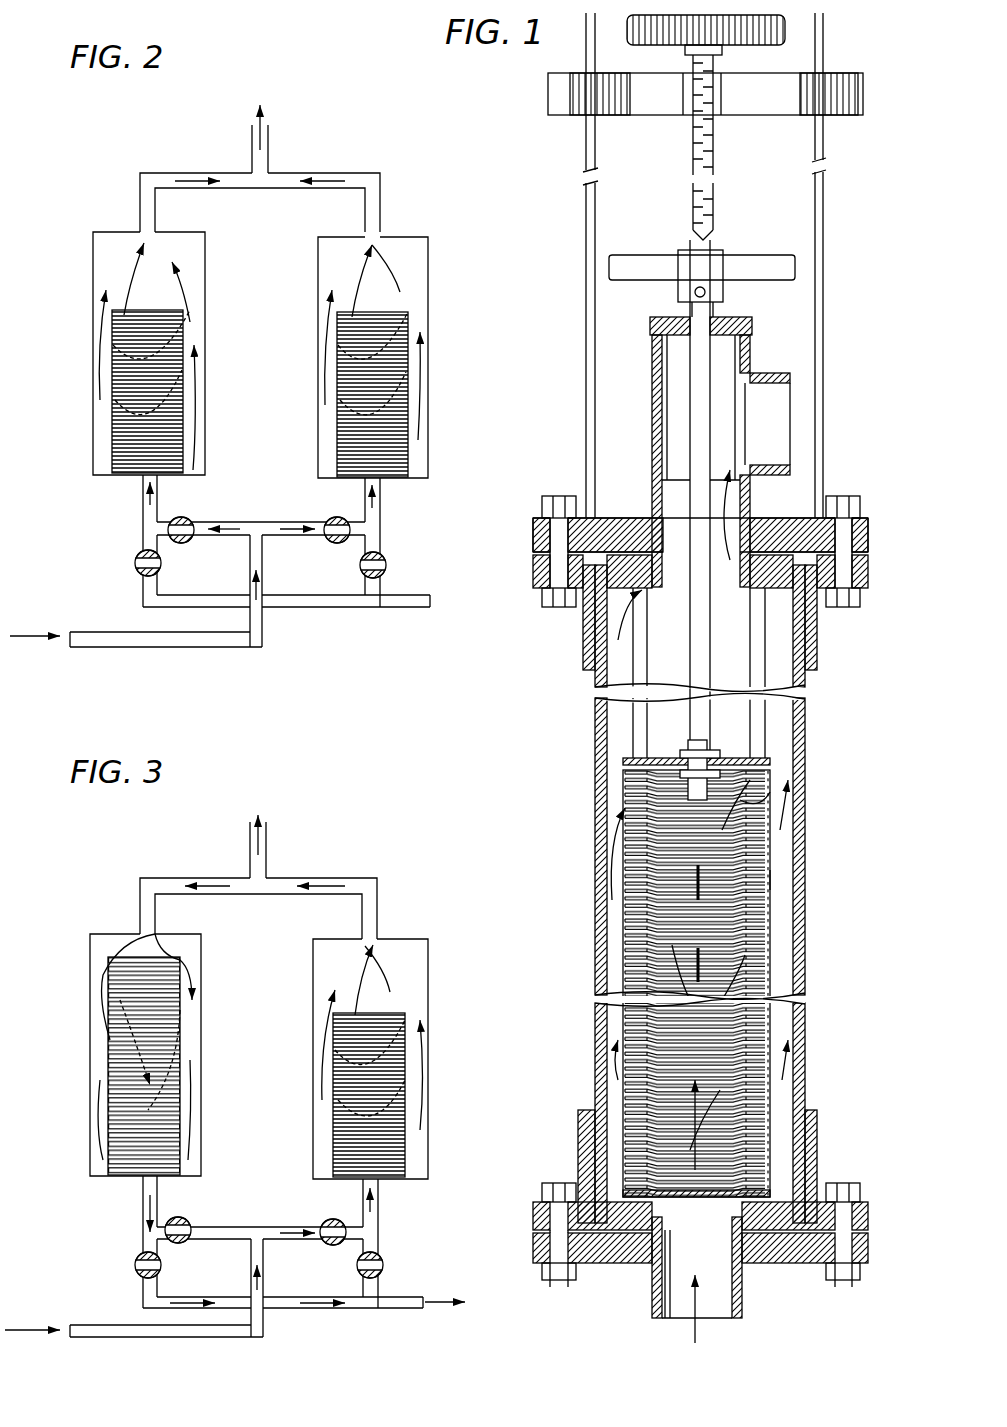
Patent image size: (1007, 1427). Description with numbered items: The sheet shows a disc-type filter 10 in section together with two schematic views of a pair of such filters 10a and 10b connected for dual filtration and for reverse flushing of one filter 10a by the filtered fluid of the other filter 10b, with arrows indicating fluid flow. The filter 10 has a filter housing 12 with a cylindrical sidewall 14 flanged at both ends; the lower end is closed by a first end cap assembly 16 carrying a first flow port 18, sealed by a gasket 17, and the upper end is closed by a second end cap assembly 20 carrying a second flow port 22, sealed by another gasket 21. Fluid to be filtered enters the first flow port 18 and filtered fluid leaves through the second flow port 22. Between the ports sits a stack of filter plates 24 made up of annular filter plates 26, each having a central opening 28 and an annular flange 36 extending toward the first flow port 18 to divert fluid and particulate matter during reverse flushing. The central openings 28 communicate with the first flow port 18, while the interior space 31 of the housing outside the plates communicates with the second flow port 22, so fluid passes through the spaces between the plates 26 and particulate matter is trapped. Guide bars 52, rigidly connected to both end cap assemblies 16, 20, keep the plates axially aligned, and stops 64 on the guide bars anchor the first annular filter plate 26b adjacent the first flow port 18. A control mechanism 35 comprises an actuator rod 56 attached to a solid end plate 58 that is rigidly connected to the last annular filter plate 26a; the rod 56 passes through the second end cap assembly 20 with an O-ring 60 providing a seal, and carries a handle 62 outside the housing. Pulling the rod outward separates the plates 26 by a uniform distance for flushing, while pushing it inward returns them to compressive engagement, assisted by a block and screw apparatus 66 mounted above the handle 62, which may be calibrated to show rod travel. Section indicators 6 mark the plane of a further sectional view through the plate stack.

In FIG. 1, the section line 6 is at (690, 877).
In FIG. 1, the filter 10 is at (580, 683).
In FIG. 2, the filter 10a is at (82, 395).
In FIG. 3, the filter 10a is at (82, 1088).
In FIG. 2, the filter 10b is at (315, 372).
In FIG. 3, the filter 10b is at (313, 1085).
In FIG. 2, the filter housing 12 is at (205, 277).
In FIG. 3, the filter housing 12 is at (201, 998).
In FIG. 1, the filter housing 12 is at (808, 718).
In FIG. 1, the cylindrical sidewall 14 is at (600, 850).
In FIG. 1, the first end cap assembly 16 is at (615, 1215).
In FIG. 1, the gasket 17 is at (585, 1240).
In FIG. 2, the first flow port 18 is at (158, 480).
In FIG. 3, the first flow port 18 is at (157, 1182).
In FIG. 1, the first flow port 18 is at (713, 1292).
In FIG. 1, the second end cap assembly 20 is at (775, 558).
In FIG. 1, the gasket 21 is at (805, 575).
In FIG. 2, the second flow port 22 is at (152, 212).
In FIG. 3, the second flow port 22 is at (150, 920).
In FIG. 1, the second flow port 22 is at (724, 497).
In FIG. 2, the stack of filter plates 24 is at (128, 333).
In FIG. 3, the stack of filter plates 24 is at (115, 1032).
In FIG. 1, the stack of filter plates 24 is at (620, 792).
In FIG. 1, the annular filter plate 26 is at (745, 868).
In FIG. 1, the last annular filter plate 26a is at (772, 783).
In FIG. 1, the first annular filter plate 26b is at (772, 1195).
In FIG. 1, the central opening 28 is at (765, 880).
In FIG. 1, the interior space 31 is at (782, 668).
In FIG. 1, the control mechanism 35 is at (690, 427).
In FIG. 1, the annular flange 36 is at (735, 835).
In FIG. 1, the guide bars 52 is at (637, 622).
In FIG. 1, the actuator rod 56 is at (695, 352).
In FIG. 1, the solid end plate 58 is at (772, 765).
In FIG. 1, the O-ring 60 is at (730, 322).
In FIG. 1, the handle 62 is at (740, 262).
In FIG. 1, the stops 64 is at (620, 1190).
In FIG. 1, the block and screw apparatus 66 is at (715, 100).